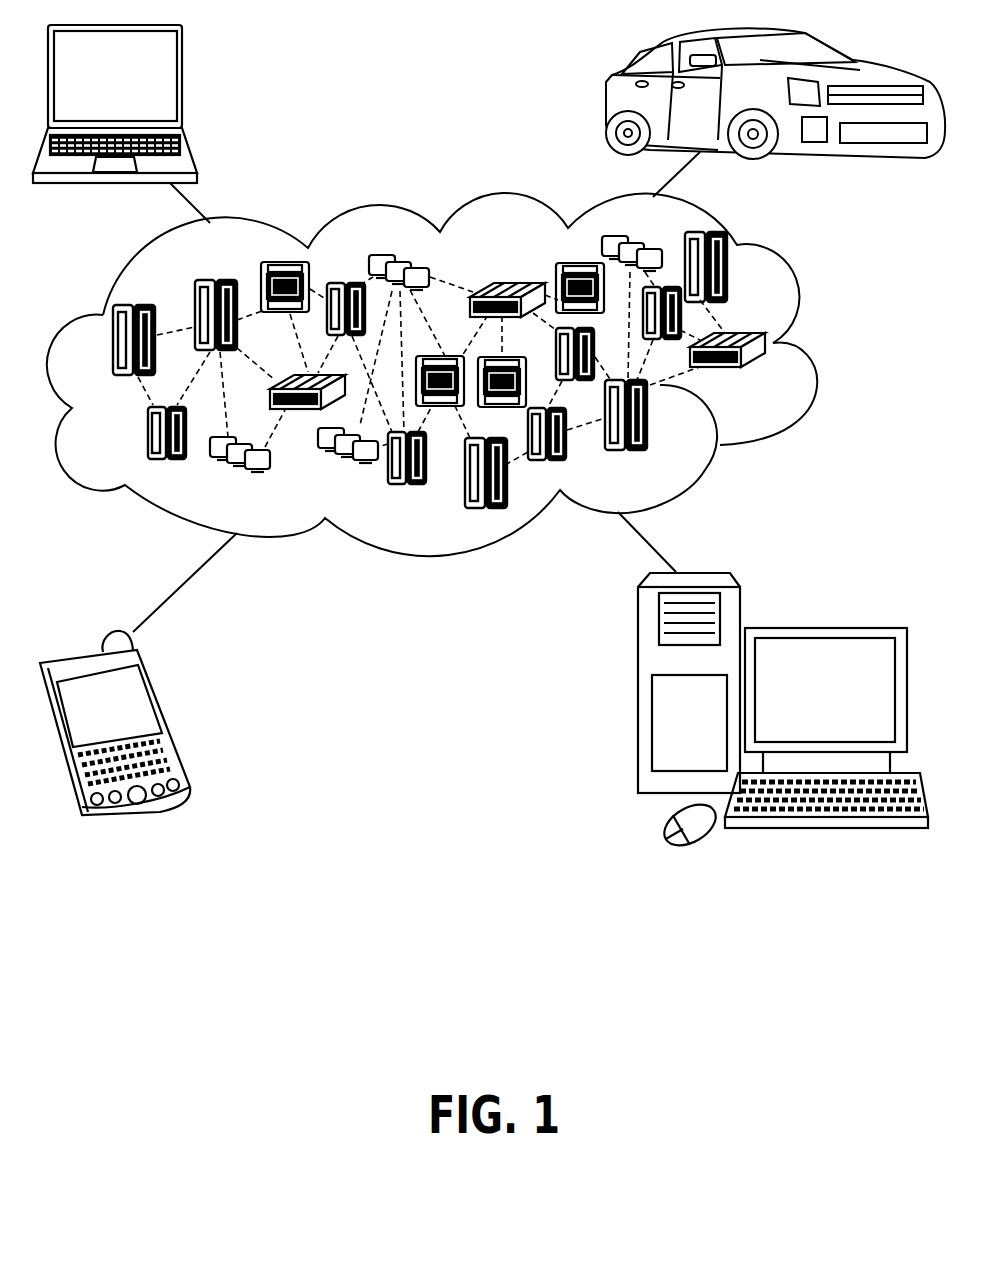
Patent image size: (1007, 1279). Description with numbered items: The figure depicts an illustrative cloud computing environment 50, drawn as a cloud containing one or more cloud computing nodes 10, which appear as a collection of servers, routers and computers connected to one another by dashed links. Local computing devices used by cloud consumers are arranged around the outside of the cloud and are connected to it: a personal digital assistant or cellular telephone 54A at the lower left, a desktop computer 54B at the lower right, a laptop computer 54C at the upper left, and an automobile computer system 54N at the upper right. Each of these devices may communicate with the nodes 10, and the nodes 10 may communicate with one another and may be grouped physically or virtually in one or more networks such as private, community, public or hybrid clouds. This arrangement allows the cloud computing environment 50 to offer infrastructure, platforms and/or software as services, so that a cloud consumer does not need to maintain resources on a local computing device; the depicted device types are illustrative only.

The cloud computing node 10 is at (490, 370).
The cloud computing environment 50 is at (818, 350).
The personal digital assistant or cellular telephone 54A is at (170, 720).
The desktop computer 54B is at (822, 628).
The laptop computer 54C is at (183, 85).
The automobile computer system 54N is at (610, 100).